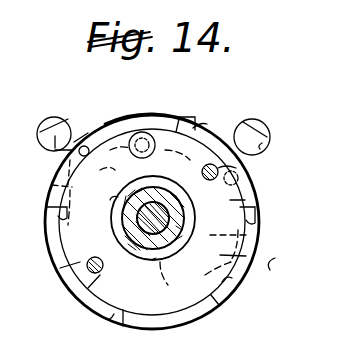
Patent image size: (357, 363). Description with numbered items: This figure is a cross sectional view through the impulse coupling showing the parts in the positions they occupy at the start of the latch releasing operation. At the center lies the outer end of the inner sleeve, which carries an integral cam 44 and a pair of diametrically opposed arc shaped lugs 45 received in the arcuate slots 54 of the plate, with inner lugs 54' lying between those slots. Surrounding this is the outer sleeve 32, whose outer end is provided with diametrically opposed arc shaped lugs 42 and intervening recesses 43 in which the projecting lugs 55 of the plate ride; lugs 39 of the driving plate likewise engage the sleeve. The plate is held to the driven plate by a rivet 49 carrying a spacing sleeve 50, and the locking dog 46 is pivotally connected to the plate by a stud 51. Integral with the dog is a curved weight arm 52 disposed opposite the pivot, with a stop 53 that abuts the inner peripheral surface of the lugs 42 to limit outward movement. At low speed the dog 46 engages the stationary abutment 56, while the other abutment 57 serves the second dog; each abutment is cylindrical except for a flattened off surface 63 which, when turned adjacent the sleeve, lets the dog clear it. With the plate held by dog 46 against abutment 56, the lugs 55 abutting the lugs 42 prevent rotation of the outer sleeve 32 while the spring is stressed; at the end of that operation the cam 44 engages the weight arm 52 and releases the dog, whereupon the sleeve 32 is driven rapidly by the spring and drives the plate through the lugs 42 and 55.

The outer sleeve 32 is at (233, 315).
The lugs 39 is at (248, 256).
The arc shaped lugs 42 is at (136, 104).
The recesses 43 is at (204, 130).
The cam 44 is at (172, 276).
The arc shaped lugs 45 is at (148, 152).
The locking dog 46 is at (76, 132).
The rivet 49 is at (245, 200).
The spacing sleeve 50 is at (218, 169).
The stud 51 is at (143, 145).
The weight arm 52 is at (252, 237).
The stops 53 is at (197, 112).
The arcuate slots 54 is at (161, 188).
The inner lugs 54' is at (183, 246).
The projecting lugs 55 is at (52, 185).
The stationary abutment 56 is at (55, 150).
The stationary abutment 57 is at (262, 143).
The flattened off surface 63 is at (267, 118).